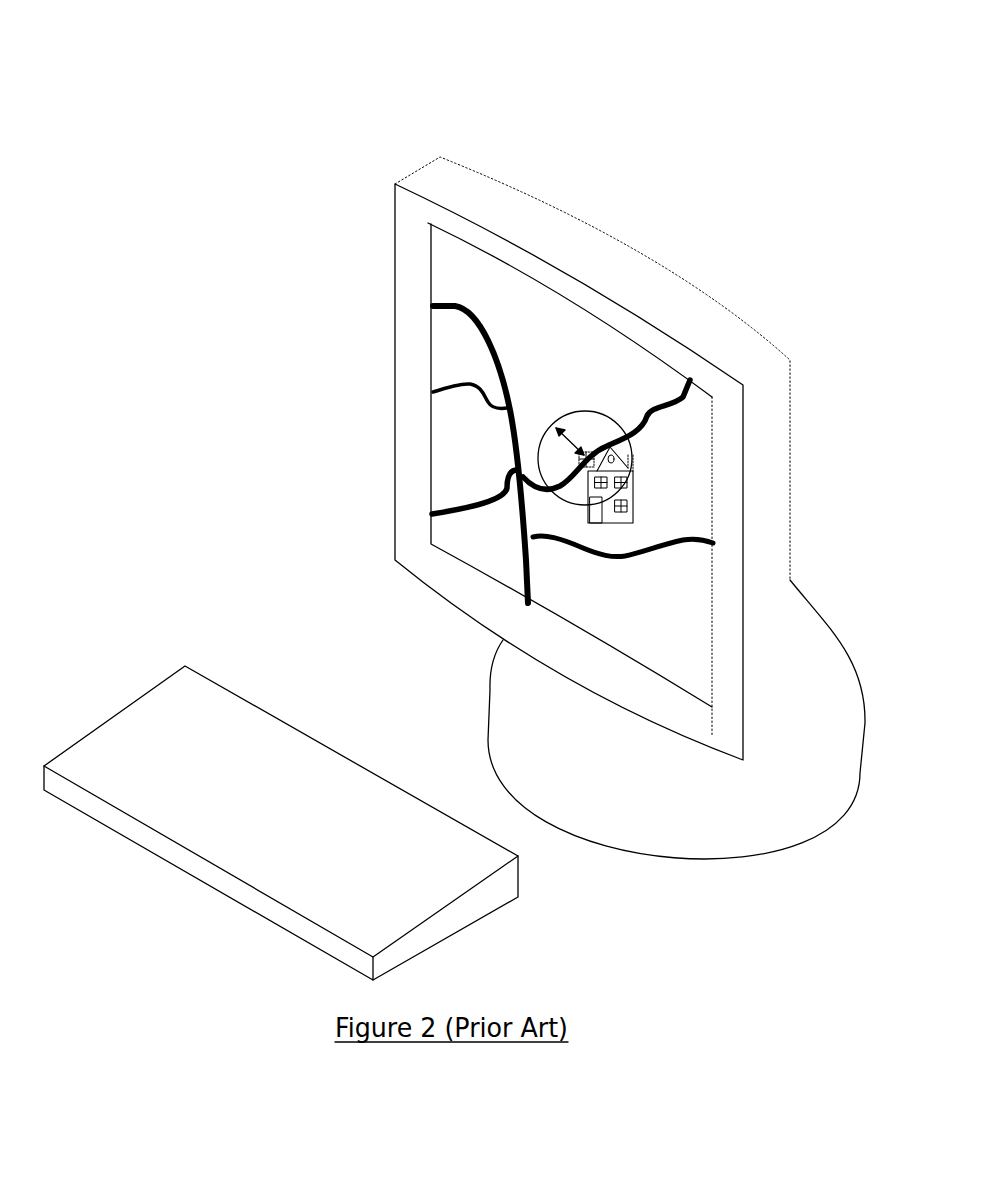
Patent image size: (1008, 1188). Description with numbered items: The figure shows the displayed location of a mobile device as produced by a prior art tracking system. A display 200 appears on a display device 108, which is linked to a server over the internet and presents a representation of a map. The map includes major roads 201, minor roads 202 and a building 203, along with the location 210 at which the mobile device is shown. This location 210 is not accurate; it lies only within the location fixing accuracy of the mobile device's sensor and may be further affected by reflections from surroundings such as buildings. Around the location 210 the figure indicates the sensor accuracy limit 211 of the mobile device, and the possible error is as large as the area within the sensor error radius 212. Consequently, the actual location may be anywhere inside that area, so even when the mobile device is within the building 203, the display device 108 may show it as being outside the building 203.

The display 200 is at (378, 65).
The display device 108 is at (540, 293).
The major roads 201 is at (500, 357).
The minor roads 202 is at (673, 538).
The building 203 is at (632, 468).
The location 210 is at (592, 460).
The sensor accuracy limit 211 is at (538, 458).
The sensor error radius 212 is at (556, 427).